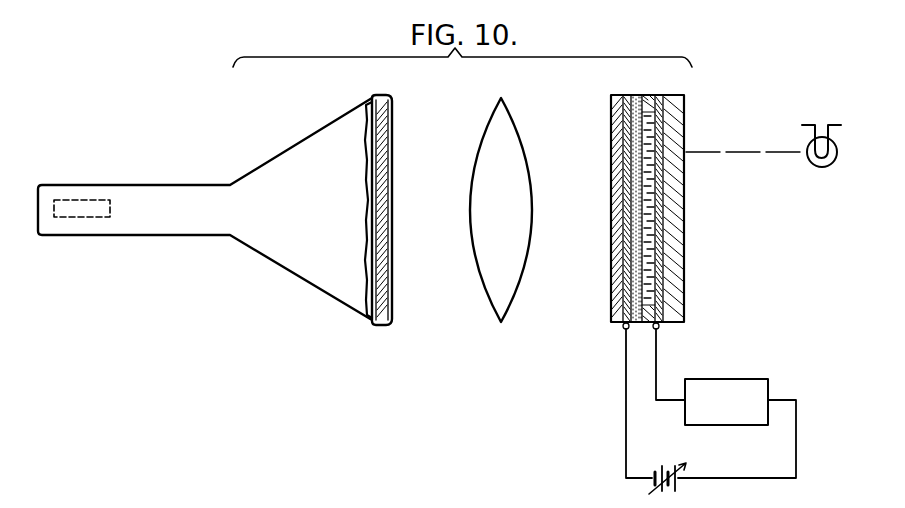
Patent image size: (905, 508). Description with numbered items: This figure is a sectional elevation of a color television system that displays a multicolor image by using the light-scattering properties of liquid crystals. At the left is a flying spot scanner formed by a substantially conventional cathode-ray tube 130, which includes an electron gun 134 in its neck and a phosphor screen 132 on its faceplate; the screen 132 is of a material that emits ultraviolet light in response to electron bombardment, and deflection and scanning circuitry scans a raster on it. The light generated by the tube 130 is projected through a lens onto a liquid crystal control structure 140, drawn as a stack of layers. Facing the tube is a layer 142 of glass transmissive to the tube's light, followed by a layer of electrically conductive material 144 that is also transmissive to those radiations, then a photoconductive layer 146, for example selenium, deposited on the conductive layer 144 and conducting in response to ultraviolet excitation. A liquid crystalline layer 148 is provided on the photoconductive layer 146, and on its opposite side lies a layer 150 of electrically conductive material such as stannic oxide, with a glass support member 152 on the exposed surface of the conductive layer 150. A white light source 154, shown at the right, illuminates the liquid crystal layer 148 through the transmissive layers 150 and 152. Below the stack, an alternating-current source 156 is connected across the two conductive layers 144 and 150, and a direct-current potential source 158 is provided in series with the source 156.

The cathode-ray tube 130 is at (170, 185).
The phosphor screen 132 is at (366, 180).
The electron gun 134 is at (73, 198).
The liquid crystal control structure 140 is at (650, 195).
The layer of glass 142 is at (617, 98).
The layer of electrically conductive material 144 is at (627, 130).
The photoconductive layer 146 is at (636, 167).
The liquid crystalline layer 148 is at (648, 203).
The layer of electrically conductive material 150 is at (658, 238).
The glass support member 152 is at (672, 265).
The light source 154 is at (821, 168).
The alternating-current source 156 is at (722, 378).
The direct-current potential source 158 is at (684, 468).